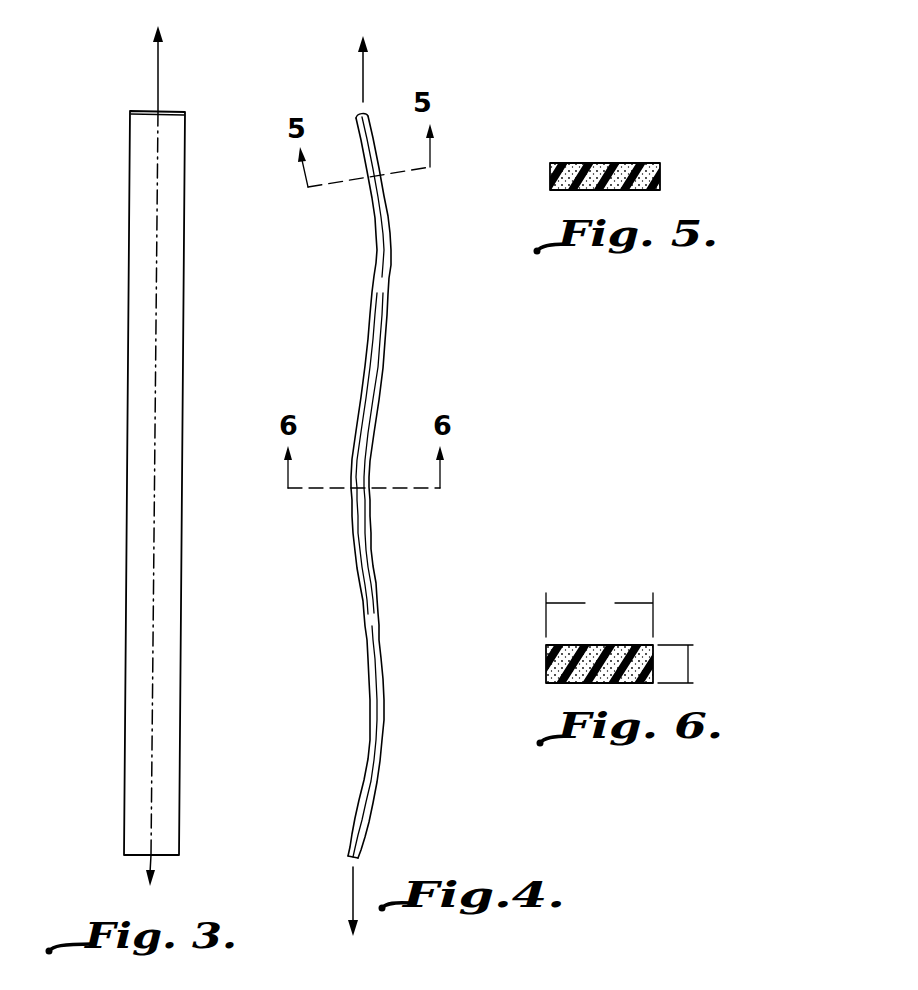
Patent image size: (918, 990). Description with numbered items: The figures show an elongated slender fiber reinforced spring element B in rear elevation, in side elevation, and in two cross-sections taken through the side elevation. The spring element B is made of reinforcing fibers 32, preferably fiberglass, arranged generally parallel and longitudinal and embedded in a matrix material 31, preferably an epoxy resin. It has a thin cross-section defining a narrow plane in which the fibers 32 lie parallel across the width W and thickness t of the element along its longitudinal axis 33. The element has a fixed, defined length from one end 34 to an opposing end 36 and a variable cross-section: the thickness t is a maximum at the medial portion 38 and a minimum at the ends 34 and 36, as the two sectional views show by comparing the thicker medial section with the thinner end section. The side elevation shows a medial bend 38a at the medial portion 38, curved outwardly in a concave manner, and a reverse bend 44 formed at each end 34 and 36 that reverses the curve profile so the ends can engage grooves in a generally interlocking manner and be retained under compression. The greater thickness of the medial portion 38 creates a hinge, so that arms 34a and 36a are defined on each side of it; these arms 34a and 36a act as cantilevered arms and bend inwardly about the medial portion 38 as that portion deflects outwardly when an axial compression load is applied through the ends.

In FIG. 6, the matrix material 31 is at (572, 682).
In FIG. 4, the reinforcing fibers 32 is at (360, 550).
In FIG. 6, the reinforcing fibers 32 is at (653, 647).
In FIG. 3, the longitudinal axis 33 is at (160, 77).
In FIG. 4, the longitudinal axis 33 is at (363, 78).
In FIG. 4, the end 34 is at (348, 853).
In FIG. 4, the arm 34a is at (362, 640).
In FIG. 4, the opposing end 36 is at (358, 127).
In FIG. 5, the opposing end 36 is at (660, 183).
In FIG. 4, the arm 36a is at (377, 293).
In FIG. 4, the medial portion 38 is at (350, 503).
In FIG. 6, the medial portion 38 is at (546, 662).
In FIG. 4, the medial bend 38a is at (356, 478).
In FIG. 4, the reverse bend 44 is at (373, 202).
In FIG. 3, the spring element B is at (127, 475).
In FIG. 4, the spring element B is at (382, 367).
In FIG. 5, the spring element B is at (550, 177).
In FIG. 6, the spring element B is at (546, 673).
In FIG. 6, the width W is at (599, 613).
In FIG. 6, the thickness t is at (688, 665).